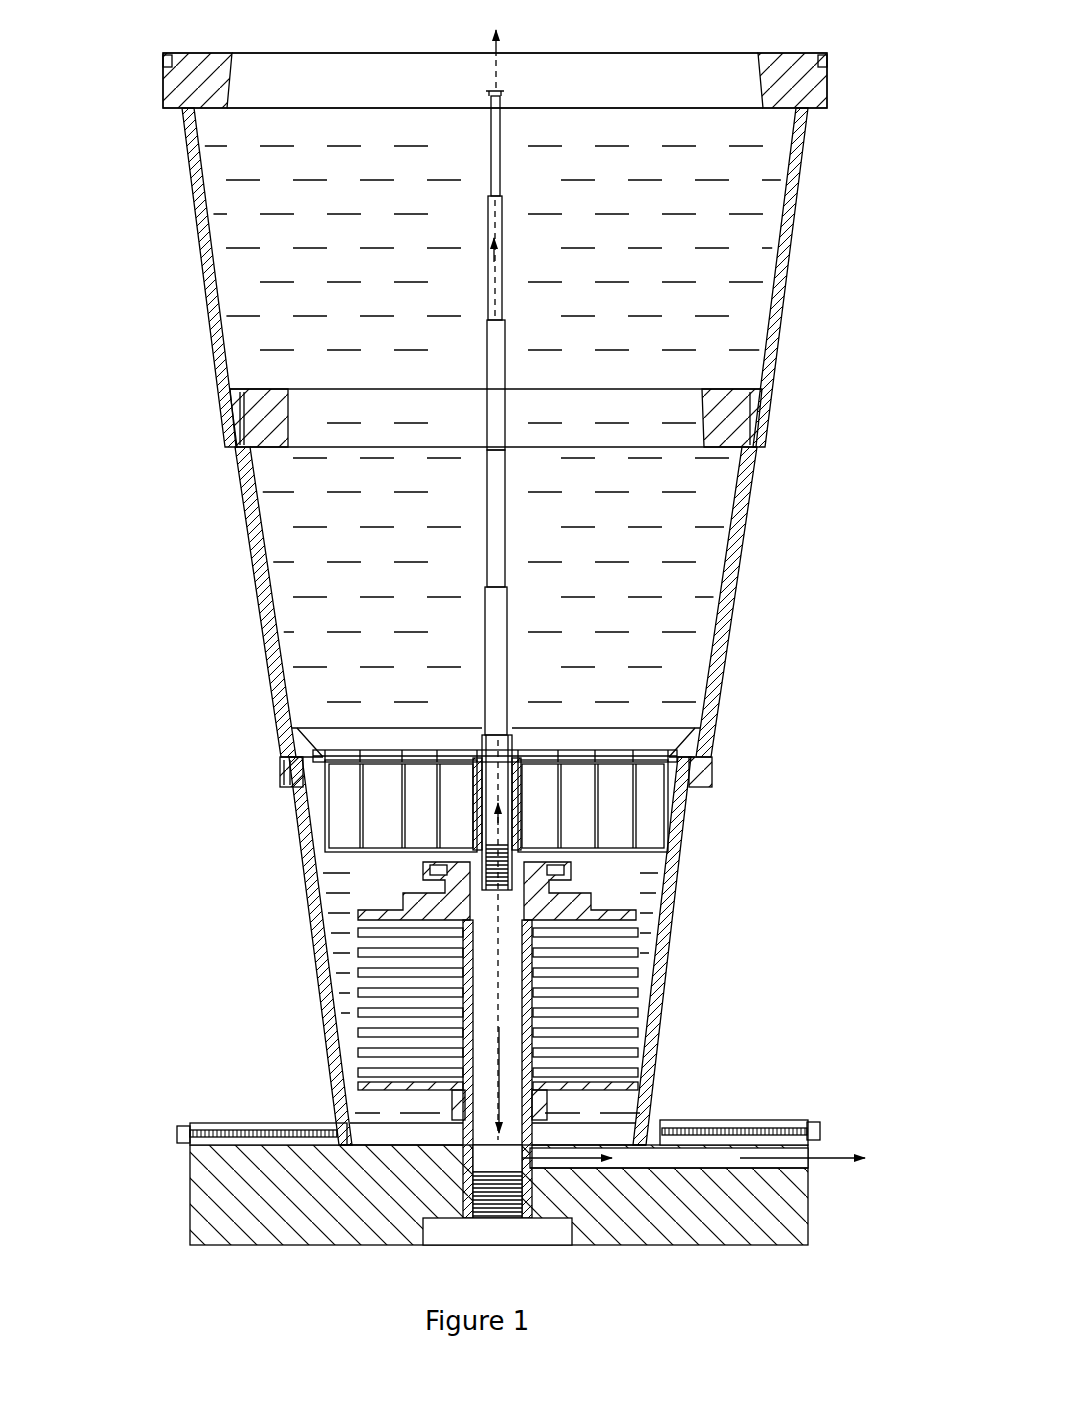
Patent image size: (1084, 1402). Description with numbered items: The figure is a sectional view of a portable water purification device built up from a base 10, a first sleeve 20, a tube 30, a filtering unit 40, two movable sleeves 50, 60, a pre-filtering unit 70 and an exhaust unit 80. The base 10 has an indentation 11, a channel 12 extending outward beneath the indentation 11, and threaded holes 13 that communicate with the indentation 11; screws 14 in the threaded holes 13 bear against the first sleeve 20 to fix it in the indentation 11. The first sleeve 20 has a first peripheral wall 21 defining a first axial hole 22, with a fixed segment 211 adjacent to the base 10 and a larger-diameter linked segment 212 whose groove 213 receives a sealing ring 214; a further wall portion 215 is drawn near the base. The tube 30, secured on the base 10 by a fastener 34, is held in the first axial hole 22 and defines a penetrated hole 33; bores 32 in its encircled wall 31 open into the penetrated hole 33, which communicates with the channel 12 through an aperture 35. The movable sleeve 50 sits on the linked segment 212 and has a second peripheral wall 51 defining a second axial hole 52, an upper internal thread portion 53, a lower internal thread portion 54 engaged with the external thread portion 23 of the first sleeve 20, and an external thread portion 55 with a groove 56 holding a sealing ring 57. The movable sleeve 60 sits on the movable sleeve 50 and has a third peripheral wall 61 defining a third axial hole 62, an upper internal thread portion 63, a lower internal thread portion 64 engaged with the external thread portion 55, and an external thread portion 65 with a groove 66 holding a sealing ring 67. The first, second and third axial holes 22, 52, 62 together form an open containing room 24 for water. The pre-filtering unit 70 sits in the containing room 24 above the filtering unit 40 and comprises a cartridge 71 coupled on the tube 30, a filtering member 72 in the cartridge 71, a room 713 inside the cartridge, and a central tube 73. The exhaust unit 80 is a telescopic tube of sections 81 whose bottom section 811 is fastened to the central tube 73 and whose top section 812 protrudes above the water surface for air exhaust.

The base 10 is at (496, 1161).
The indentation 11 is at (400, 1147).
The channel 12 is at (710, 1162).
The threaded holes 13 is at (250, 1125).
The screws 14 is at (183, 1128).
The first sleeve 20 is at (527, 1026).
The first peripheral wall 21 is at (322, 990).
The first axial hole 22 is at (345, 935).
The external thread portion 23 is at (783, 744).
The containing room 24 is at (298, 508).
The tube 30 is at (512, 1108).
The encircled wall 31 is at (465, 1005).
The bores 32 is at (645, 1010).
The penetrated hole 33 is at (493, 1150).
The fastener 34 is at (497, 1198).
The aperture 35 is at (580, 1170).
The filtering unit 40 is at (642, 968).
The movable sleeve 50 is at (513, 616).
The second peripheral wall 51 is at (262, 612).
The second axial hole 52 is at (660, 507).
The internal thread portion 53 is at (672, 380).
The internal thread portion 54 is at (712, 757).
The external thread portion 55 is at (801, 437).
The groove 56 is at (245, 428).
The sealing ring 57 is at (235, 398).
The movable sleeve 60 is at (495, 243).
The third peripheral wall 61 is at (190, 180).
The third axial hole 62 is at (300, 226).
The internal thread portion 63 is at (705, 83).
The internal thread portion 64 is at (745, 410).
The external thread portion 65 is at (810, 95).
The groove 66 is at (774, 62).
The sealing ring 67 is at (828, 65).
The pre-filtering unit 70 is at (509, 893).
The cartridge 71 is at (378, 853).
The filtering member 72 is at (640, 900).
The central tube 73 is at (345, 790).
The exhaust unit 80 is at (493, 376).
The sections 81 is at (490, 258).
The bottom section 811 is at (497, 753).
The top section 812 is at (490, 162).
The linked segment 212 is at (712, 775).
The groove 213 is at (285, 770).
The sealing ring 214 is at (285, 738).
The housing right wall 215 is at (672, 1110).
The fixed segment 211 is at (347, 1153).
The room 713 is at (427, 800).